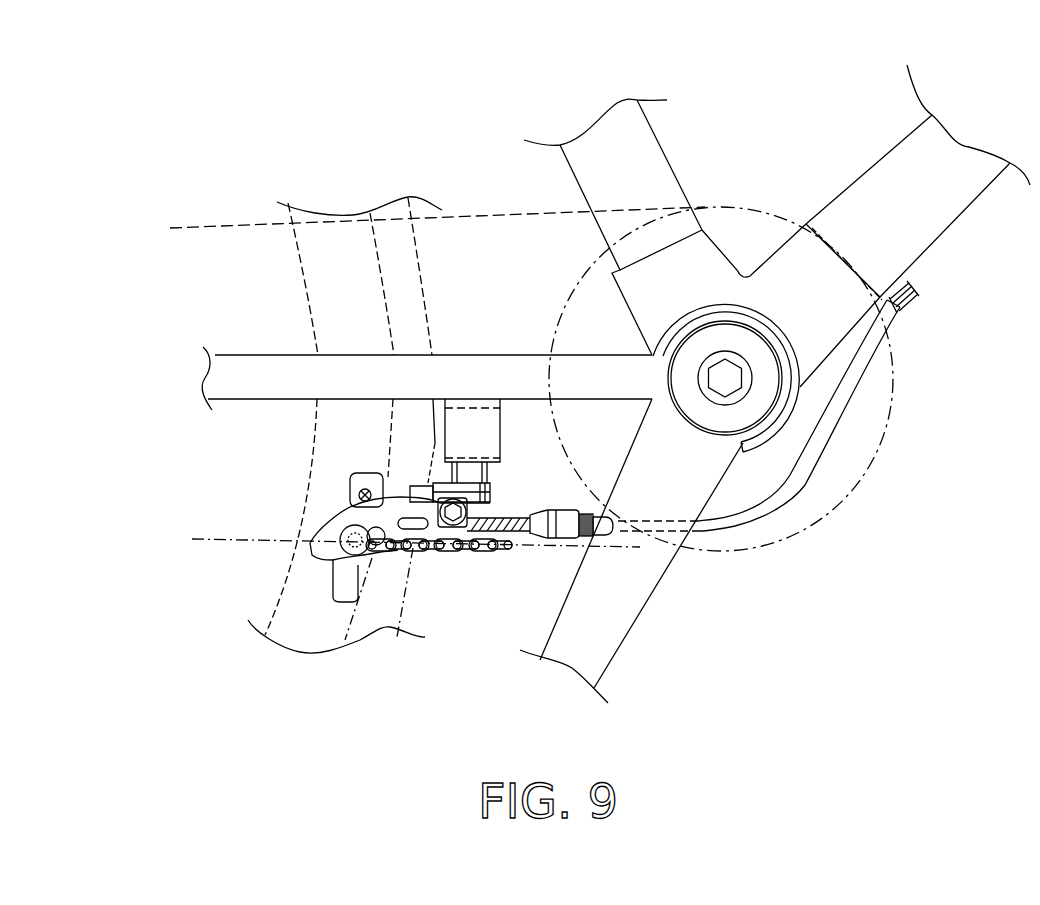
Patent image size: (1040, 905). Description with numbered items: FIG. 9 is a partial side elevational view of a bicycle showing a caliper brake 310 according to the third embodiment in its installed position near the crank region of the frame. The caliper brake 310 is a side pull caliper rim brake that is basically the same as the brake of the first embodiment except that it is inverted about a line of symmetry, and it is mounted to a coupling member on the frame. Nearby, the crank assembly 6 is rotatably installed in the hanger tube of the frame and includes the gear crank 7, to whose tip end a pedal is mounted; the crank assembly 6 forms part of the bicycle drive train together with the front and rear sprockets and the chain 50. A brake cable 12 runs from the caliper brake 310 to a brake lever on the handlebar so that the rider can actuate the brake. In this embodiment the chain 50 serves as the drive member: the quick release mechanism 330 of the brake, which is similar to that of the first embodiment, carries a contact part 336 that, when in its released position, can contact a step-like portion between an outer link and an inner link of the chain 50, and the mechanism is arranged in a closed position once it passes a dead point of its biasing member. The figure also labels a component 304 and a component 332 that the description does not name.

The crank assembly 6 is at (693, 578).
The gear crank 7 is at (637, 608).
The brake cable 12 is at (787, 490).
The chain 50 is at (500, 553).
The actuator unit 304 is at (460, 443).
The caliper brake 310 is at (325, 577).
The quick release mechanism 330 is at (471, 579).
The chain 332 is at (448, 557).
The contact part 336 is at (388, 628).